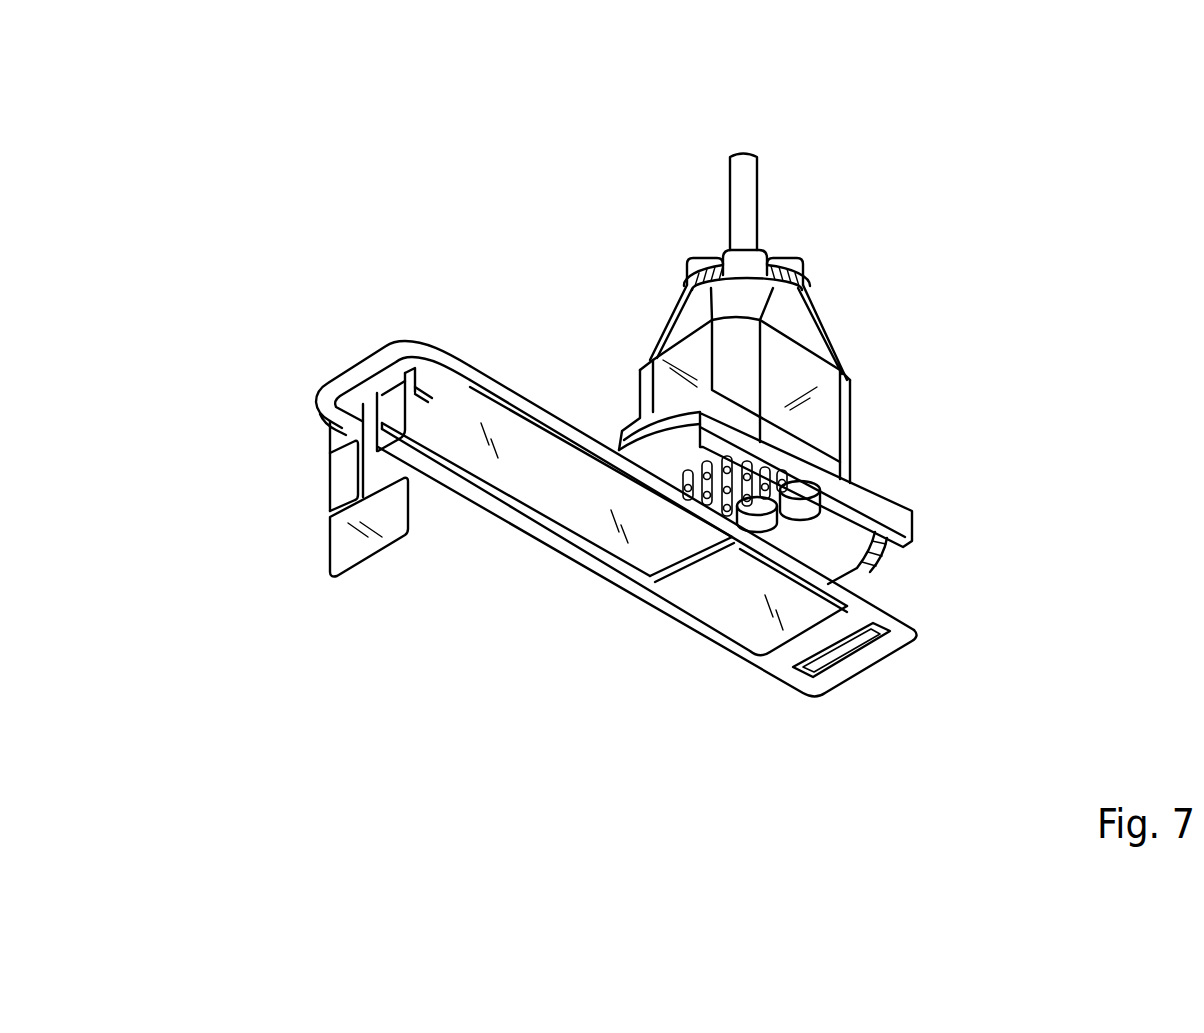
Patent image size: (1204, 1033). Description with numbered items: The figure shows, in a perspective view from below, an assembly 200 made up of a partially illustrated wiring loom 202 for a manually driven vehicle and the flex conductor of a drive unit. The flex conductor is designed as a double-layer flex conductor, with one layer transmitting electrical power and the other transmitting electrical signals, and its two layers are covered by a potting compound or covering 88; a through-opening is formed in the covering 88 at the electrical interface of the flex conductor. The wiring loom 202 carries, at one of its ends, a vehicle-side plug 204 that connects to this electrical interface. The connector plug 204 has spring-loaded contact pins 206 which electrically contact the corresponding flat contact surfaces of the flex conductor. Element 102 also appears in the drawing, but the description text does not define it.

The assembly 200 is at (354, 268).
The covering 88 is at (523, 391).
The tray 102 is at (593, 597).
The wiring loom 202 is at (747, 203).
The plug 204 is at (877, 438).
The spring-loaded contact pins 206 is at (792, 535).